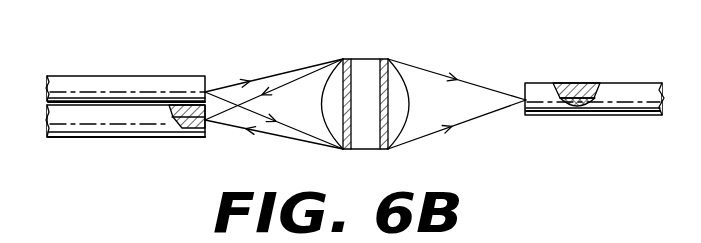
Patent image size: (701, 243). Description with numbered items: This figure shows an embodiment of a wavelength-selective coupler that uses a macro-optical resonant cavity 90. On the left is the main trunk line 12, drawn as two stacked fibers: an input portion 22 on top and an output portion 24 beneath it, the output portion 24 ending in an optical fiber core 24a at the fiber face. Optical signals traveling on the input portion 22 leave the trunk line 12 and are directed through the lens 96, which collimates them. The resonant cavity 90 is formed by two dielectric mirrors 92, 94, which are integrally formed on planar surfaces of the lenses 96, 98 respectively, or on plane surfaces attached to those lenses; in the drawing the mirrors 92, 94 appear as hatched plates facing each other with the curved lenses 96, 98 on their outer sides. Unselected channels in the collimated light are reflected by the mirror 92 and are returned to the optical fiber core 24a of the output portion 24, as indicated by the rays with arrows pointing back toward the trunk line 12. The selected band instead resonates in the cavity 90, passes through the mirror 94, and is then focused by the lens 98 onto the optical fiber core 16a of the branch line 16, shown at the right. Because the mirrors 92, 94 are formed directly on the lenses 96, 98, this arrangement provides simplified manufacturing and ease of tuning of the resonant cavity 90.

The main trunk line 12 is at (124, 104).
The input portion 22 is at (146, 76).
The output portion 24 is at (125, 135).
The optical fiber core 24a is at (186, 129).
The resonant cavity 90 is at (366, 83).
The dielectric mirror 92 is at (343, 59).
The dielectric mirror 94 is at (388, 59).
The lens 96 is at (322, 104).
The lens 98 is at (408, 104).
The branch line 16 is at (594, 99).
The optical fiber core 16a is at (577, 108).